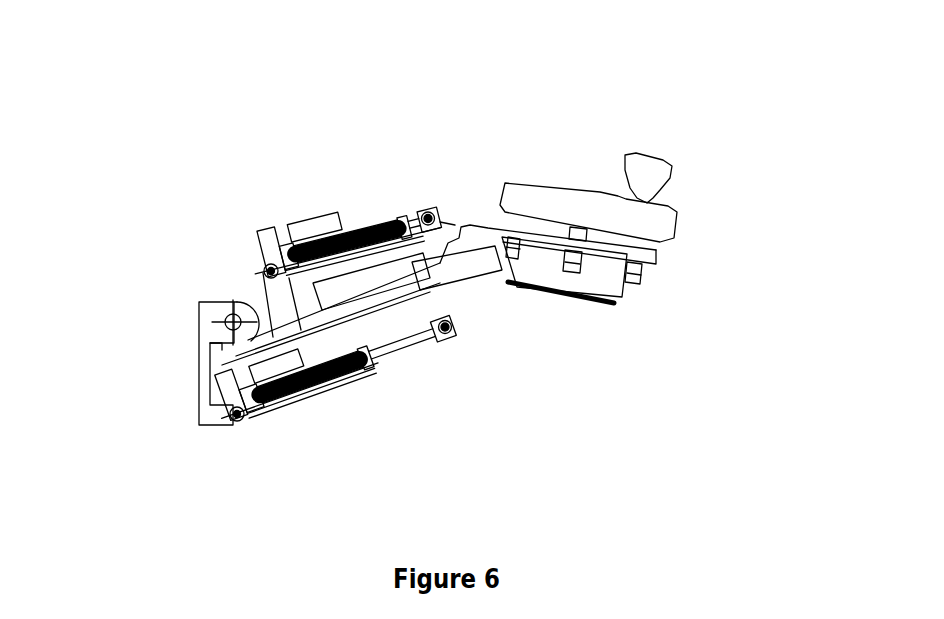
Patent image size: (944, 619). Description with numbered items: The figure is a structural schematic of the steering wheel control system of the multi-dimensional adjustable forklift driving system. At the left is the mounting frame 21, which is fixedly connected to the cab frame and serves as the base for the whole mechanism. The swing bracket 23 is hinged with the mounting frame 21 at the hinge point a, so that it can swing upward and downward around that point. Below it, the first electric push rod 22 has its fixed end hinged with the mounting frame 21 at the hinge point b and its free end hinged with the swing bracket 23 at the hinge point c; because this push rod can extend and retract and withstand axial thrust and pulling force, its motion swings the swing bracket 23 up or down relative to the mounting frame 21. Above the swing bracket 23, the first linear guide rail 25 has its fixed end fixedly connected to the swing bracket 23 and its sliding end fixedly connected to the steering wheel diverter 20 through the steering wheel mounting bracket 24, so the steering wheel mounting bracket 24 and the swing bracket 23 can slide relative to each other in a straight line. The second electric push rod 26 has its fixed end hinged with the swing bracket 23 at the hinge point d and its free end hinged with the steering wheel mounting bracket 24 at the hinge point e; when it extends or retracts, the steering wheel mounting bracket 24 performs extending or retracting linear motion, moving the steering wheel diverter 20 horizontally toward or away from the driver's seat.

The steering wheel diverter 20 is at (600, 293).
The mounting frame 21 is at (202, 365).
The first electric push rod 22 is at (302, 400).
The swing bracket 23 is at (443, 297).
The steering wheel mounting bracket 24 is at (474, 228).
The first linear guide rail 25 is at (368, 285).
The second electric push rod 26 is at (307, 287).
The hinge point a is at (231, 313).
The hinge point b is at (237, 428).
The hinge point c is at (445, 337).
The hinge point d is at (268, 265).
The hinge point e is at (429, 212).